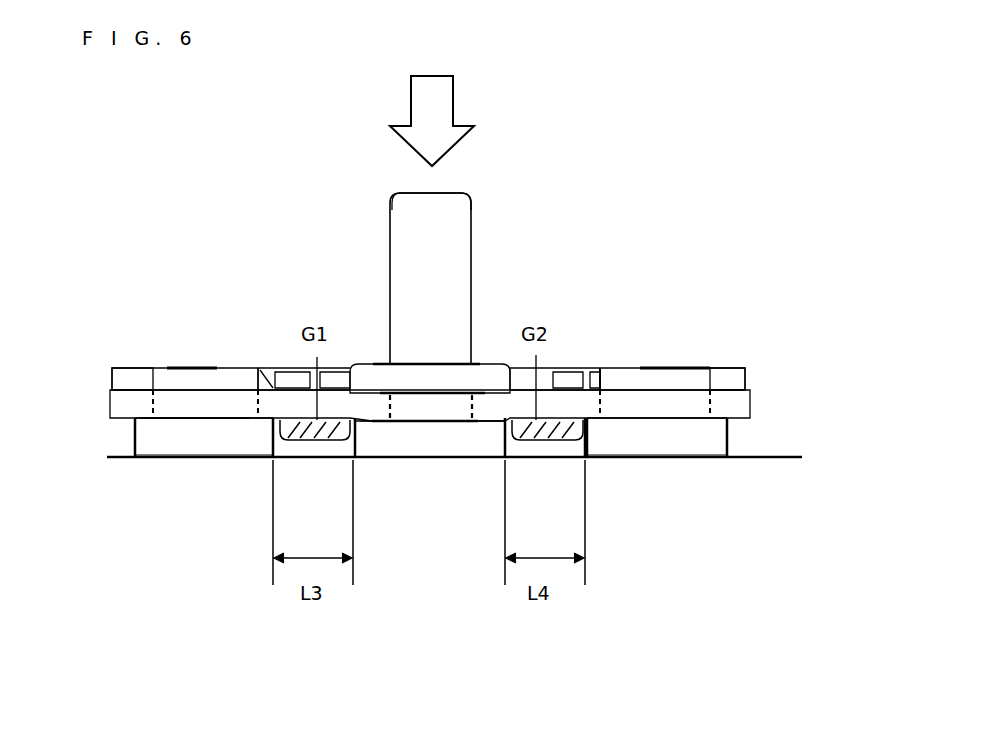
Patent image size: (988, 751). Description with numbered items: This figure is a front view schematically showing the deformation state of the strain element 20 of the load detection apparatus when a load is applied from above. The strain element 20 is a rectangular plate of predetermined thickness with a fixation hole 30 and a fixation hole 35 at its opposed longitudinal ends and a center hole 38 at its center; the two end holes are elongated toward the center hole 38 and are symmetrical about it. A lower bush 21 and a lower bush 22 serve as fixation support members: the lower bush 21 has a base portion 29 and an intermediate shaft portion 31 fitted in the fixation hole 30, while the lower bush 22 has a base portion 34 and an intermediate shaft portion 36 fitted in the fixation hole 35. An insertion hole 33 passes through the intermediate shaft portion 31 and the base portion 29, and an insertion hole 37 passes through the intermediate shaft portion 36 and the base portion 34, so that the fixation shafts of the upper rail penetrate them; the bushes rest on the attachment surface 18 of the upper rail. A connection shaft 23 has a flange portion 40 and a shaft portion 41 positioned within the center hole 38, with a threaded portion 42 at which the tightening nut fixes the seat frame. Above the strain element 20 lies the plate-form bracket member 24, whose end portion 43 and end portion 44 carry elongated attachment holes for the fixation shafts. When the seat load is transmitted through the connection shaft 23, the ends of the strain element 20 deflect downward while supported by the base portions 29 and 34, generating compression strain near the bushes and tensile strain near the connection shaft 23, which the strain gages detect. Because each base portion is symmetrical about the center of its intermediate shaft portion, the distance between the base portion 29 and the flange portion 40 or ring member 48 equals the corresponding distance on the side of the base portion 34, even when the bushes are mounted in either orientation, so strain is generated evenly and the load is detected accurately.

The attachment surface 18 is at (778, 456).
The strain element 20 is at (108, 408).
The lower bush 21 is at (198, 458).
The lower bush 22 is at (640, 470).
The connection shaft 23 is at (432, 468).
The bracket member 24 is at (108, 380).
The base portion 29 is at (152, 440).
The fixation hole 30 is at (258, 395).
The intermediate shaft portion 31 is at (188, 405).
The insertion hole 33 is at (210, 367).
The base portion 34 is at (710, 440).
The fixation hole 35 is at (600, 405).
The intermediate shaft portion 36 is at (683, 390).
The insertion hole 37 is at (657, 368).
The center hole 38 is at (368, 364).
The flange portion 40 is at (472, 440).
The shaft portion 41 is at (402, 248).
The threaded portion 42 is at (397, 196).
The end portion 43 is at (110, 366).
The end portion 44 is at (720, 368).
The ring member 48 is at (388, 362).